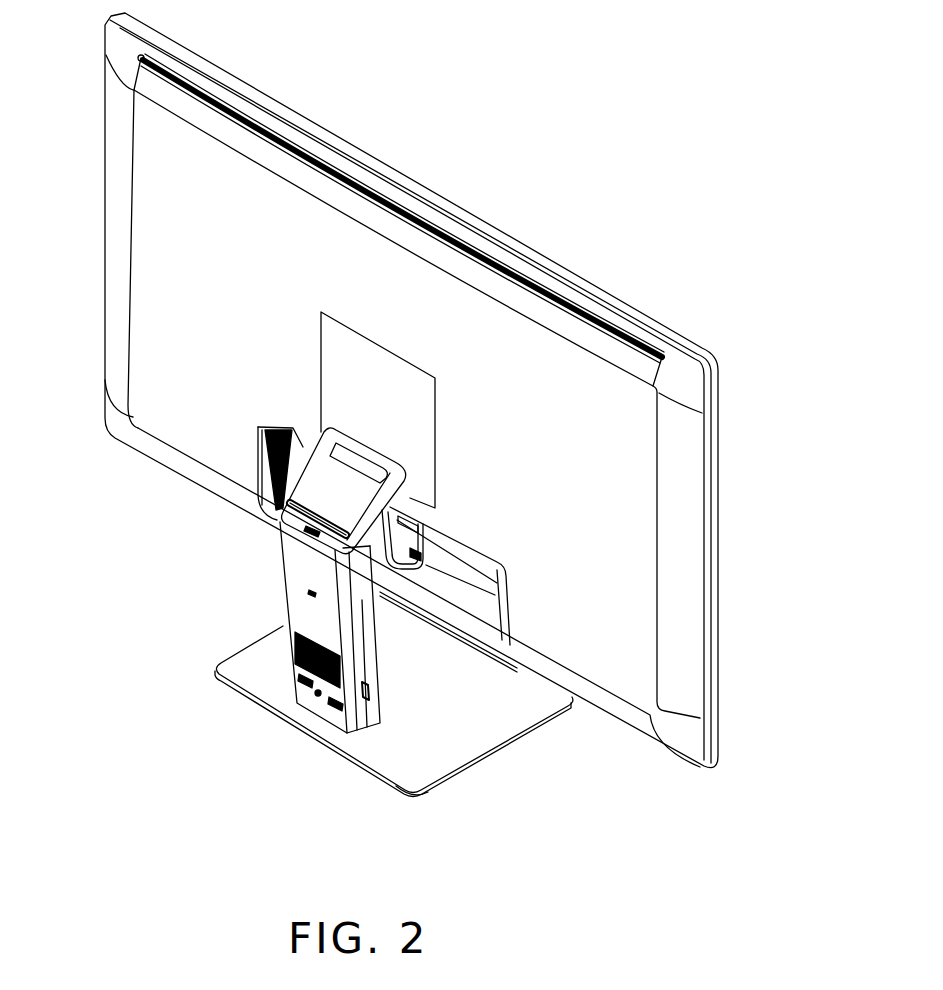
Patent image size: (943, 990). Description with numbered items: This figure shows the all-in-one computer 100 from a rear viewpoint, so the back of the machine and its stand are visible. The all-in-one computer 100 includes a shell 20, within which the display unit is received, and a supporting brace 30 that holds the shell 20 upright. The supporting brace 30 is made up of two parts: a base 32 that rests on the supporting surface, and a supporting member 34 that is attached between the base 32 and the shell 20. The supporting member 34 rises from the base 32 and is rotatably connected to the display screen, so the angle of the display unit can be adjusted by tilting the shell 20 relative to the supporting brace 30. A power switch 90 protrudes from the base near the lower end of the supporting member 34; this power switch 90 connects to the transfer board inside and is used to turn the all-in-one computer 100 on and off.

The all-in-one computer 100 is at (503, 102).
The shell 20 is at (145, 257).
The supporting brace 30 is at (160, 543).
The base 32 is at (258, 667).
The supporting member 34 is at (297, 597).
The power switch 90 is at (368, 693).